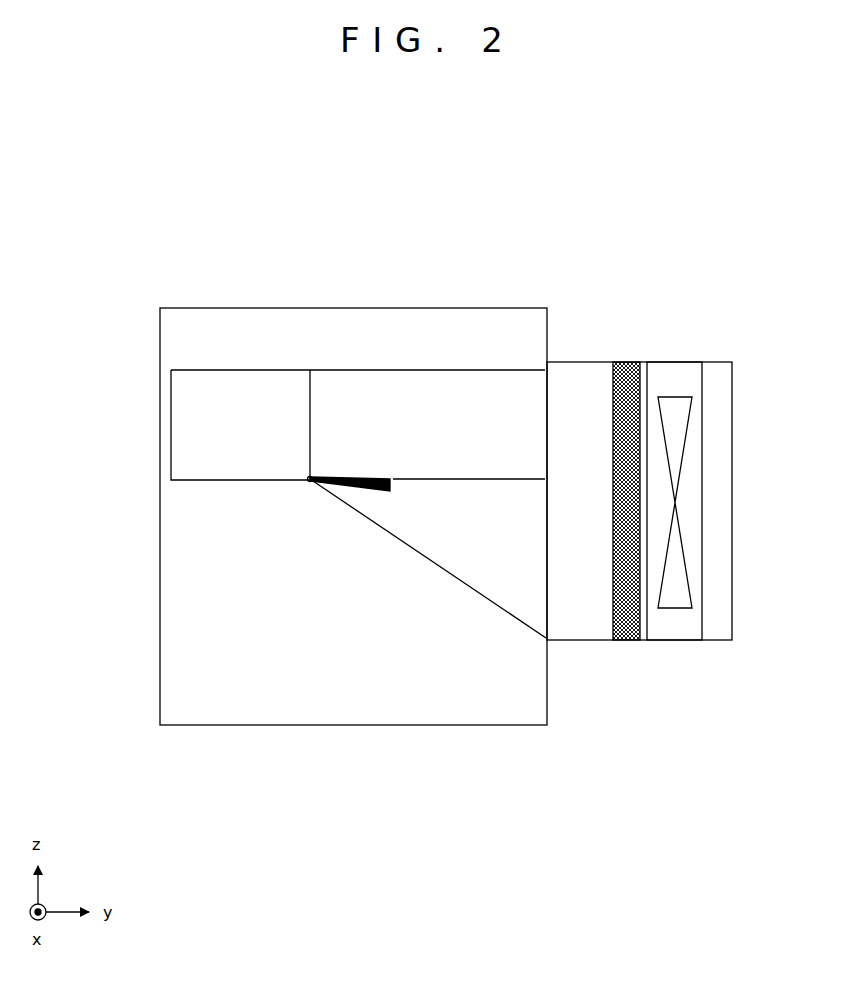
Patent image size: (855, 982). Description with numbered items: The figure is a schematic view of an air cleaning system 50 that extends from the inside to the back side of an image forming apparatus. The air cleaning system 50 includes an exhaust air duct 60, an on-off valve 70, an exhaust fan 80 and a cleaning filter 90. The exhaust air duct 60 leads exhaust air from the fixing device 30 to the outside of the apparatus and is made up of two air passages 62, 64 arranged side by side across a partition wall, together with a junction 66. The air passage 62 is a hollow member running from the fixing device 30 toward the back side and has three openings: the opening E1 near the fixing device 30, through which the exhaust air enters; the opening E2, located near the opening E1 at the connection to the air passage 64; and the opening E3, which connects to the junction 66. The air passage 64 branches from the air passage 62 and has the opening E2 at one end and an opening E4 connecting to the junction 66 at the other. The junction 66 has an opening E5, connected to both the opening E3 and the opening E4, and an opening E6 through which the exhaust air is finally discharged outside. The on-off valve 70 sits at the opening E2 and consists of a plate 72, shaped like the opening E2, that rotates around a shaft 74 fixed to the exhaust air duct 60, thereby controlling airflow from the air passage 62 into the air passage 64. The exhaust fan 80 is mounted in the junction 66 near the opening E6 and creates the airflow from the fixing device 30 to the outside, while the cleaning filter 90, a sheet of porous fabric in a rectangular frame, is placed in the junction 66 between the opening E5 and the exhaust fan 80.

The fixing device 30 is at (200, 385).
The air cleaning system 50 is at (688, 190).
The exhaust air duct 60 is at (441, 255).
The air passage 62 is at (428, 384).
The air passage 64 is at (455, 564).
The junction 66 is at (594, 376).
The on-off valve 70 is at (277, 559).
The plate 72 is at (356, 498).
The shaft 74 is at (308, 483).
The exhaust fan 80 is at (689, 375).
The cleaning filter 90 is at (625, 641).
The opening E1 is at (312, 422).
The opening E2 is at (384, 478).
The opening E3 is at (545, 425).
The opening E4 is at (546, 562).
The opening E5 is at (547, 460).
The opening E6 is at (732, 497).